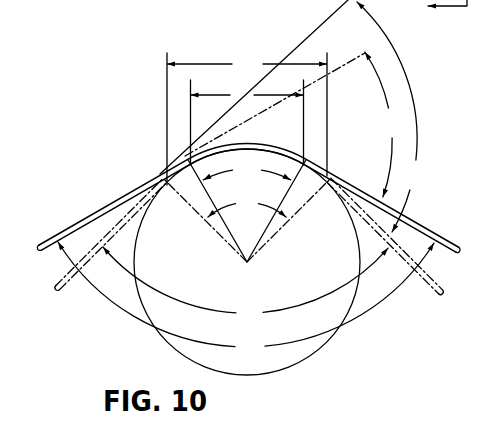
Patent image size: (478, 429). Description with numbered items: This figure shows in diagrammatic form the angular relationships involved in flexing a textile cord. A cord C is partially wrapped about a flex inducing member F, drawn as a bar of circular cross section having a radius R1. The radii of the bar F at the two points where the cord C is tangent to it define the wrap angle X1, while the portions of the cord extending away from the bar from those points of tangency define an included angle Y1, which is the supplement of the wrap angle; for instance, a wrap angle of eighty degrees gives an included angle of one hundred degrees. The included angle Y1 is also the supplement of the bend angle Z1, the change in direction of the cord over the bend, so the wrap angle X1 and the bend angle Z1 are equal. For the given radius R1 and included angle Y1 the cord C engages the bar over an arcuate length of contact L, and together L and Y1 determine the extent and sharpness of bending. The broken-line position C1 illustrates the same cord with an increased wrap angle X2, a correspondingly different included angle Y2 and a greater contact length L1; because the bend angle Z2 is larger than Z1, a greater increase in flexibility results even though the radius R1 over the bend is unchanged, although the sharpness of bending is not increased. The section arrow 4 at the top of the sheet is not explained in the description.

The flex inducing member F is at (325, 344).
The cord C is at (95, 211).
The strip in second bent position C1 is at (68, 275).
The length of contact L is at (247, 122).
The chord length between tangent points (second position) L1 is at (247, 119).
The wrap angle X1 is at (247, 211).
The wrap angle (second position) X2 is at (247, 220).
The radius R1 is at (287, 193).
The included angle Y1 is at (246, 301).
The arc between strip ends (second position) Y2 is at (245, 288).
The bend angle Z1 is at (291, 124).
The bend angle Z2 is at (292, 116).
The section arrow 4 is at (437, 7).